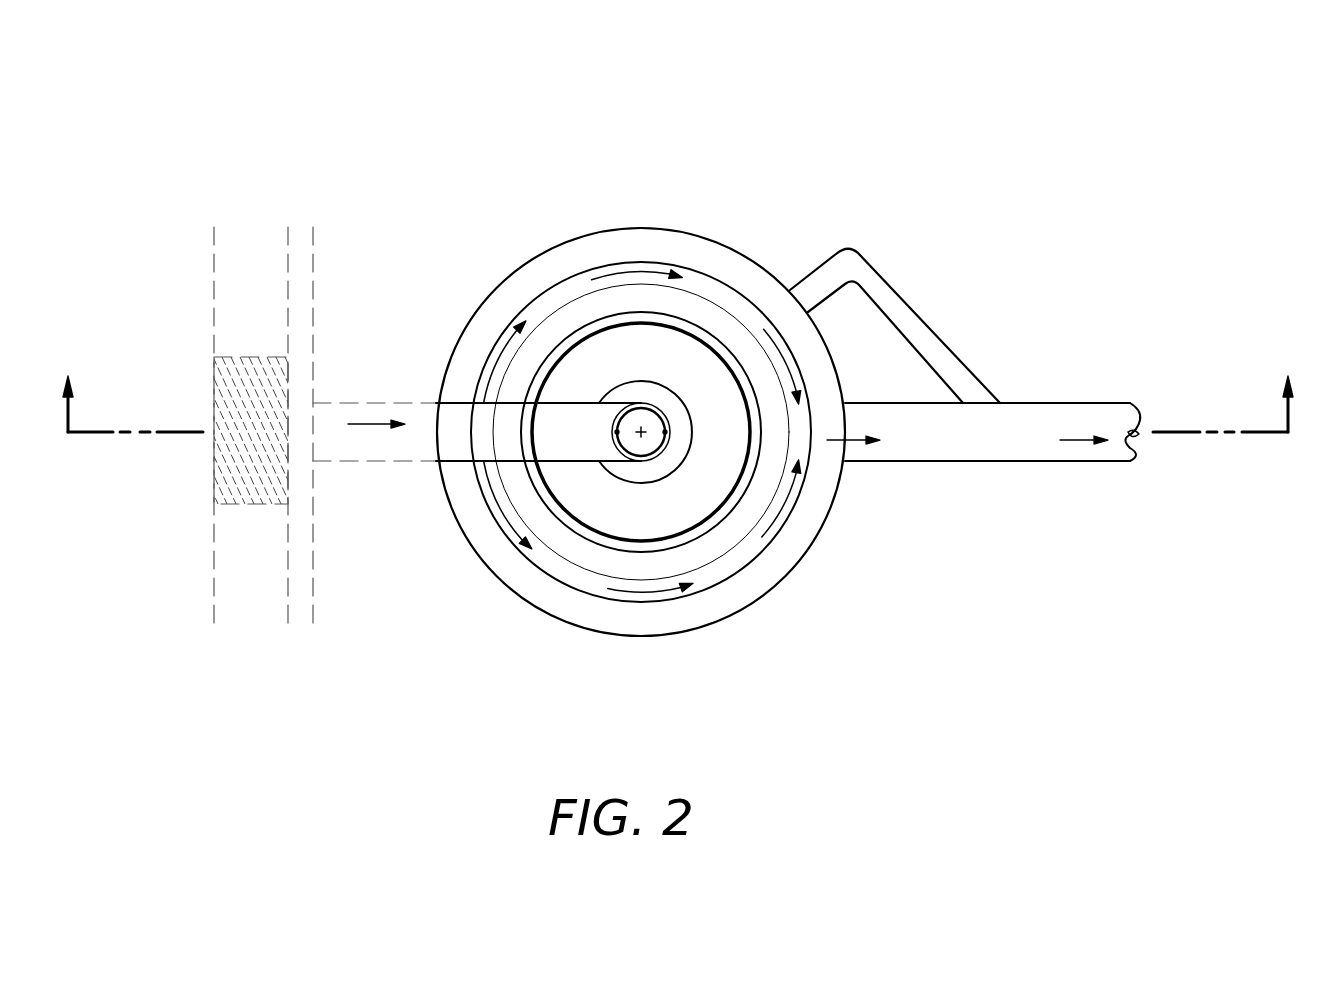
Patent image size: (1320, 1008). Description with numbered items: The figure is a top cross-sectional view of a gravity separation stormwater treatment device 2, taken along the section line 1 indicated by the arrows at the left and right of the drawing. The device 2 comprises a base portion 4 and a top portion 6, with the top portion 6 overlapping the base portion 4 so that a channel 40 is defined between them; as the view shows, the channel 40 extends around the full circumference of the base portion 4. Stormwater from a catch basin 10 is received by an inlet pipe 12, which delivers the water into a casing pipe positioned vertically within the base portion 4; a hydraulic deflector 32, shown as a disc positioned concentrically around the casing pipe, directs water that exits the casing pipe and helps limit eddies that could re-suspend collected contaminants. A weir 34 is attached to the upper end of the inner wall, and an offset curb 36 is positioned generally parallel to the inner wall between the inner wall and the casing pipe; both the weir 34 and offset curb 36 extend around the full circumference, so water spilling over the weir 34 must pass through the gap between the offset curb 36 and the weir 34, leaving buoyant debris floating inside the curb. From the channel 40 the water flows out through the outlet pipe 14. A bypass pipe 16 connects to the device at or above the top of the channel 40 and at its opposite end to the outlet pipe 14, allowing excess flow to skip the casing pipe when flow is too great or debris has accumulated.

The section line 1- 1 is at (680, 398).
The gravity separation stormwater treatment device 2 is at (383, 120).
The base portion 4 is at (728, 533).
The top portion 6 is at (803, 533).
The catch basin 10 is at (242, 402).
The inlet pipe 12 is at (335, 413).
The outlet pipe 14 is at (1003, 447).
The bypass pipe 16 is at (900, 307).
The hydraulic deflector 32 is at (628, 483).
The weir 34 is at (702, 333).
The offset curb 36 is at (687, 317).
The channel 40 is at (718, 572).